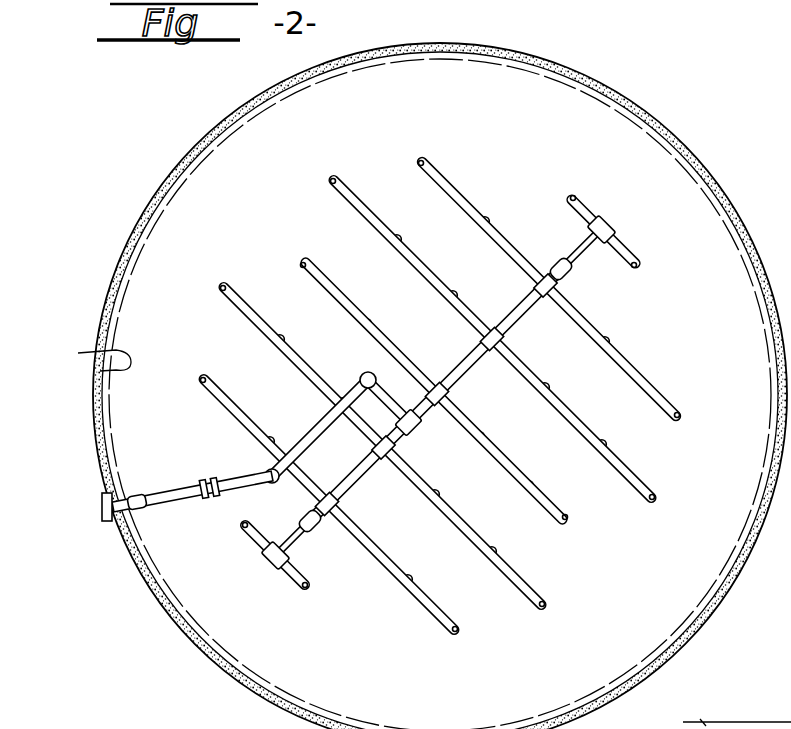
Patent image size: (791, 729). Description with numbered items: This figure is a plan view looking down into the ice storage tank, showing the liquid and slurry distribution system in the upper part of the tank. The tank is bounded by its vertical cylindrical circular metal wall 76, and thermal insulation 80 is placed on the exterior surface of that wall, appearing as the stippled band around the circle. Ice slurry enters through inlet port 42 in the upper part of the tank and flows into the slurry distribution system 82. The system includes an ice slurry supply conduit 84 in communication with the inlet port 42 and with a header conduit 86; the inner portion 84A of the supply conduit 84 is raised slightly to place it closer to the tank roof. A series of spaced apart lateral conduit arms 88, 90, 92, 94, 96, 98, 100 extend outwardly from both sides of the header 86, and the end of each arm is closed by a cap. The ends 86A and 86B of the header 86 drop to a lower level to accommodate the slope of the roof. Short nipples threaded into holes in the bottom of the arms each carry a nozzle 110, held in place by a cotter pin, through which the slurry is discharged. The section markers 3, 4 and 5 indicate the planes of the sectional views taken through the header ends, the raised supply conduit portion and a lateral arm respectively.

The inlet port 42 is at (102, 510).
The vertical cylindrical circular metal wall 76 is at (78, 353).
The thermal insulation 80 is at (246, 120).
The slurry distribution system 82 is at (253, 240).
The ice slurry supply conduit 84 is at (188, 497).
The inner portion of supply conduit 84A is at (311, 431).
The header conduit 86 is at (370, 480).
The end of header 86A is at (303, 546).
The end of header 86B is at (622, 256).
The lateral conduit arm 88 is at (256, 548).
The lateral conduit arm 90 is at (233, 410).
The lateral conduit arm 92 is at (276, 352).
The lateral conduit arm 94 is at (334, 298).
The lateral conduit arm 96 is at (404, 262).
The lateral conduit arm 98 is at (484, 240).
The lateral conduit arm 100 is at (592, 218).
The nozzle 110 is at (432, 162).
The section line 3- 3 is at (712, 129).
The section line 4- 4 is at (309, 247).
The section line 5- 5 is at (607, 522).